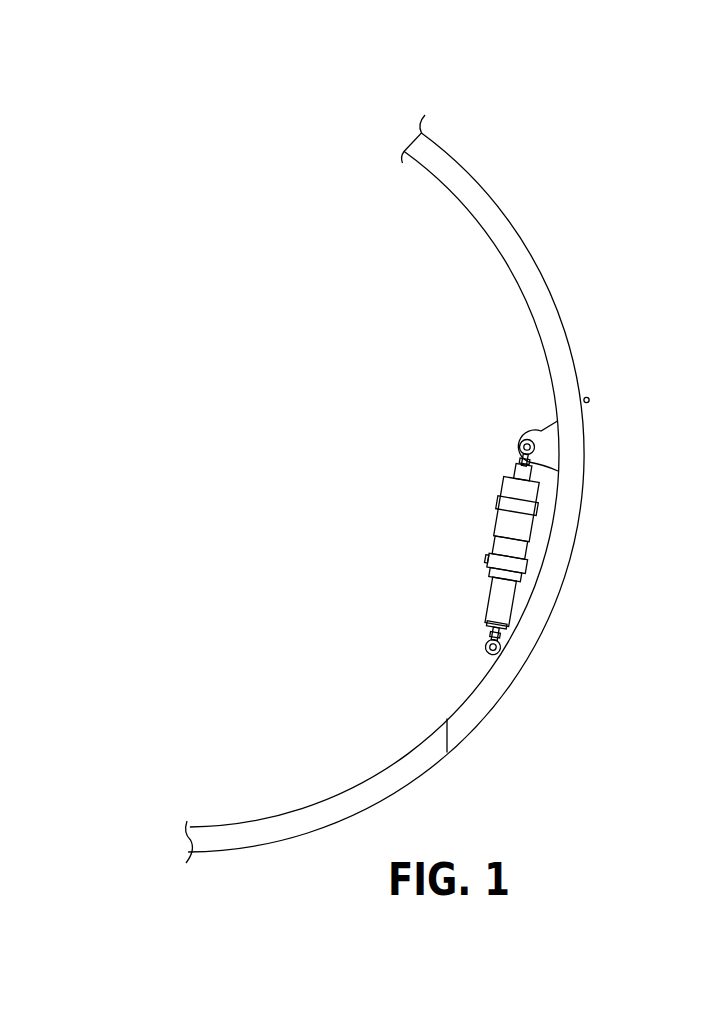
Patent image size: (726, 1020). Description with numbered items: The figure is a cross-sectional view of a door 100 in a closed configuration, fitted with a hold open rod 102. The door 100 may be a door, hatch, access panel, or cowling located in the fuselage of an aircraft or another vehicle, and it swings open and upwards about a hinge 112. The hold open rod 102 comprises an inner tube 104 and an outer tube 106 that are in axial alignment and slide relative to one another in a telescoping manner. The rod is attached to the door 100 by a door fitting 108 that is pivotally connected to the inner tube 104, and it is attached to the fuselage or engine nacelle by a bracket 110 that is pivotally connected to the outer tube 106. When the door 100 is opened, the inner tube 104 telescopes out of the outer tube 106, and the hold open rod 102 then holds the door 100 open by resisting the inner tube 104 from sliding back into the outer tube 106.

The door 100 is at (557, 561).
The hold open rod 102 is at (407, 548).
The inner tube 104 is at (490, 607).
The outer tube 106 is at (500, 530).
The door fitting 108 is at (485, 646).
The bracket 110 is at (533, 433).
The hinge 112 is at (589, 399).